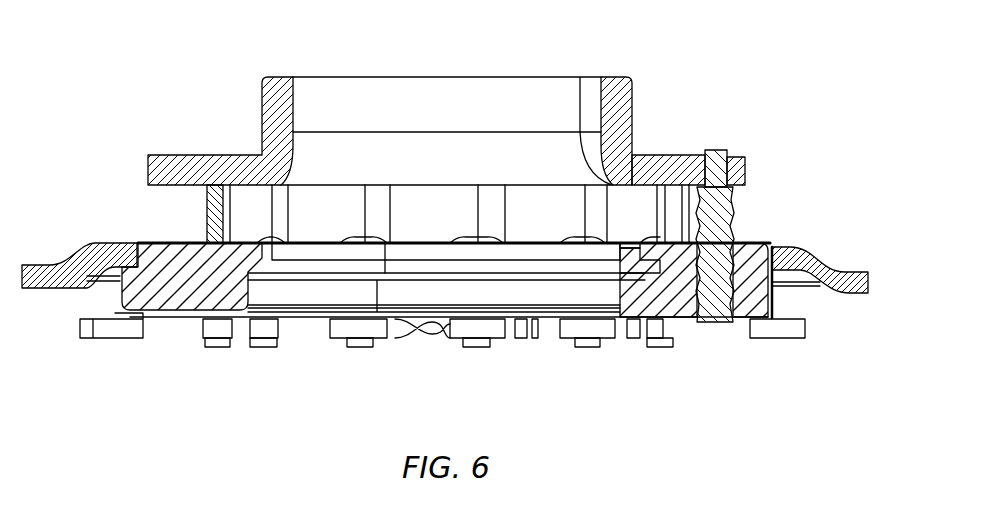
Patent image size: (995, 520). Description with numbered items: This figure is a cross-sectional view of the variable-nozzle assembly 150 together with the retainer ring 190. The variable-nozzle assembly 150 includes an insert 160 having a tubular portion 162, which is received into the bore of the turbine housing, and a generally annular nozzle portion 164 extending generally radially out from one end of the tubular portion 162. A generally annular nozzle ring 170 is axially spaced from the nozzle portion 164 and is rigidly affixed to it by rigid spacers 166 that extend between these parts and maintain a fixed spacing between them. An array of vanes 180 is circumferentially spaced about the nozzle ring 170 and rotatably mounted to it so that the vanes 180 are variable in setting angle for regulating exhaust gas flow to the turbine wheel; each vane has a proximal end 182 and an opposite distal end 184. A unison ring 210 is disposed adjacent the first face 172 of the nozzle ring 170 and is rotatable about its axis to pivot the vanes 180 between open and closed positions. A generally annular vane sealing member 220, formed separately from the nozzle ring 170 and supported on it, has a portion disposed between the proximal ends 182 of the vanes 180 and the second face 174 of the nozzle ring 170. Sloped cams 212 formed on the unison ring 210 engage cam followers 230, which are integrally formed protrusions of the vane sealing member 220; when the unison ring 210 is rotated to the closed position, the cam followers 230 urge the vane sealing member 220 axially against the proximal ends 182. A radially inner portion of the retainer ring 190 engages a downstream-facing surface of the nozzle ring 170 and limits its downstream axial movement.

The variable-nozzle assembly 150 is at (257, 123).
The insert 160 is at (446, 95).
The tubular portion 162 is at (617, 102).
The nozzle portion 164 is at (670, 170).
The rigid spacers 166 is at (723, 218).
The nozzle ring 170 is at (667, 298).
The first face 172 is at (155, 312).
The second face 174 is at (623, 243).
The vanes 180 is at (345, 195).
The proximal ends 182 is at (328, 250).
The distal ends 184 is at (432, 187).
The retainer ring 190 is at (83, 263).
The unison ring 210 is at (107, 330).
The cams 212 is at (420, 317).
The vane sealing member 220 is at (173, 243).
The cam followers 230 is at (770, 305).